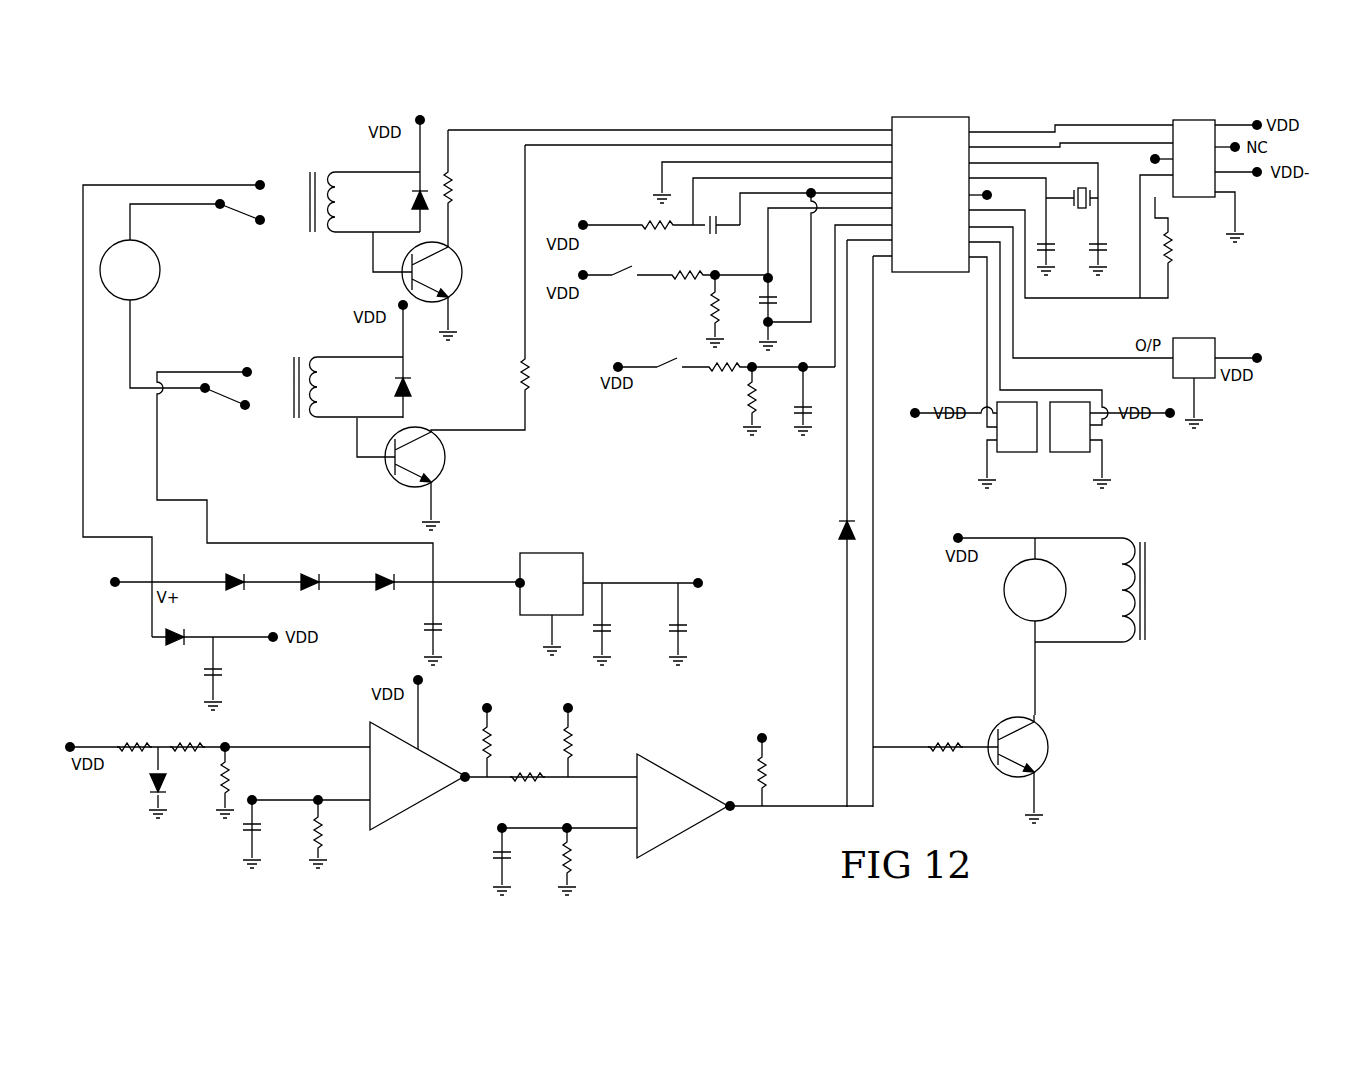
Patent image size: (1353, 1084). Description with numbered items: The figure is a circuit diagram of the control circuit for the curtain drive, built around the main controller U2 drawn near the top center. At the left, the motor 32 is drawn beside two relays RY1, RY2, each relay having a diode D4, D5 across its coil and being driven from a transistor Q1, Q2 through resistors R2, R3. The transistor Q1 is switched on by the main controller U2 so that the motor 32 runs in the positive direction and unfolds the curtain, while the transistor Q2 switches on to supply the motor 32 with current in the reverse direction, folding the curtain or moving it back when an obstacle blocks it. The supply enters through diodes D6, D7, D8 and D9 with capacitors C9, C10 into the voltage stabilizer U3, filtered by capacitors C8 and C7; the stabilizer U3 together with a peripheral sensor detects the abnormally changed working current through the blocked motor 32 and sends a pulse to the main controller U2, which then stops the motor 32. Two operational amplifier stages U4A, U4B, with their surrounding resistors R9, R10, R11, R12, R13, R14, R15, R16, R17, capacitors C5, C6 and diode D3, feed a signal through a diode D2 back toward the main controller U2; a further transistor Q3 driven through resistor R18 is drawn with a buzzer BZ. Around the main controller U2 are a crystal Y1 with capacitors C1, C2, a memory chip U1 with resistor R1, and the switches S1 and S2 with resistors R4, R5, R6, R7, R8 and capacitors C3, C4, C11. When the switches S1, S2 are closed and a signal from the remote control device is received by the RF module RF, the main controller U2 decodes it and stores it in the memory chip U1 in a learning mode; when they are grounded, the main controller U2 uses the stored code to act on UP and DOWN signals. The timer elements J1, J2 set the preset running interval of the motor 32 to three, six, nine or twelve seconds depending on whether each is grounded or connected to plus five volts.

The motor 32 is at (130, 270).
The relay 1 RY1 is at (365, 215).
The relay 2 RY2 is at (348, 401).
The diode D2 is at (832, 531).
The diode D3 is at (171, 782).
The diode D4 is at (404, 176).
The diode D5 is at (387, 361).
The diode D6 is at (233, 596).
The diode D7 is at (308, 596).
The diode D8 is at (384, 596).
The diode D9 is at (212, 649).
The transistor Q1 is at (432, 286).
The transistor Q2 is at (424, 474).
The transistor Q3 is at (1035, 769).
The resistor R1 is at (1177, 231).
The resistor R2 is at (462, 188).
The resistor R3 is at (494, 288).
The resistor R4 is at (644, 236).
The resistor R5 is at (719, 286).
The resistor R6 is at (726, 311).
The resistor R7 is at (771, 377).
The resistor R8 is at (763, 401).
The resistor R9 is at (784, 768).
The resistor R10 is at (591, 738).
The resistor R11 is at (583, 861).
The resistor R12 is at (528, 788).
The resistor R13 is at (505, 740).
The resistor R14 is at (334, 834).
The resistor R15 is at (242, 782).
The resistor R16 is at (187, 736).
The resistor R17 is at (134, 736).
The resistor R18 is at (945, 761).
The capacitor C1 is at (1111, 257).
The capacitor C2 is at (1058, 257).
The capacitor C3 is at (780, 314).
The capacitor C4 is at (816, 401).
The capacitor C5 is at (514, 861).
The capacitor C6 is at (265, 834).
The capacitor C7 is at (691, 624).
The capacitor C8 is at (618, 624).
The capacitor C9 is at (450, 624).
The capacitor C10 is at (230, 673).
The capacitor C11 is at (719, 234).
The memory chip U1 is at (1194, 158).
The main controller U2 is at (930, 194).
The voltage stabilizer U3 is at (551, 604).
The operational amplifier U4A is at (417, 776).
The operational amplifier U4B is at (682, 806).
The switch S1 is at (626, 284).
The switch S2 is at (662, 374).
The crystal Y1 is at (1072, 211).
The RF module RF is at (1194, 383).
The timer element J1 is at (1007, 445).
The timer element J2 is at (1080, 445).
The buzzer BZ is at (1074, 590).